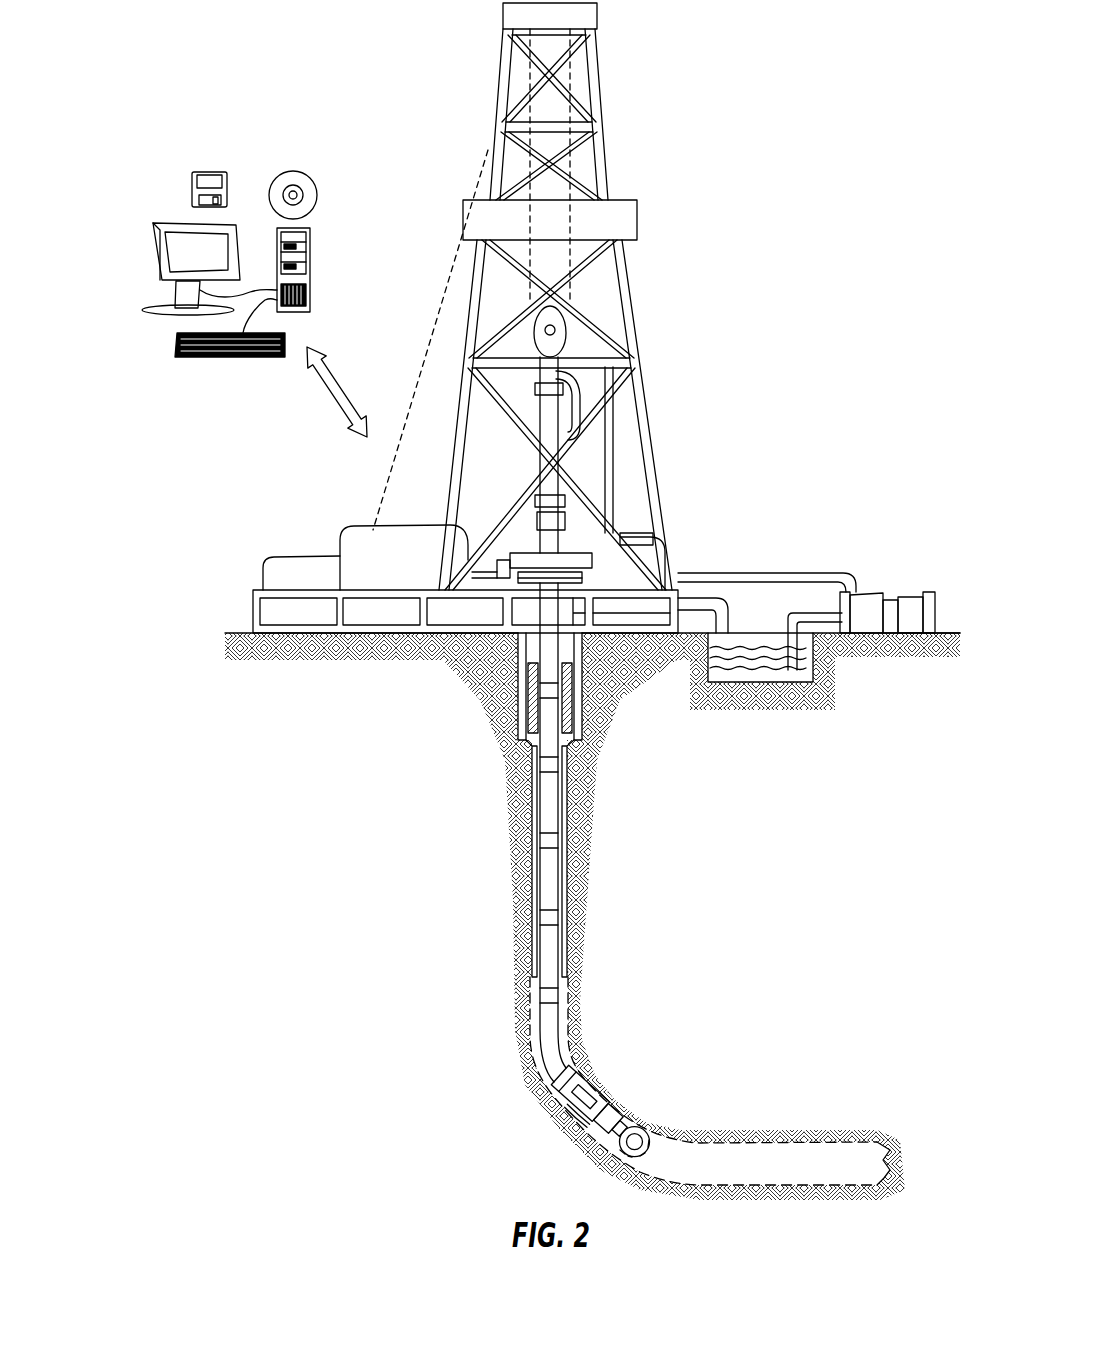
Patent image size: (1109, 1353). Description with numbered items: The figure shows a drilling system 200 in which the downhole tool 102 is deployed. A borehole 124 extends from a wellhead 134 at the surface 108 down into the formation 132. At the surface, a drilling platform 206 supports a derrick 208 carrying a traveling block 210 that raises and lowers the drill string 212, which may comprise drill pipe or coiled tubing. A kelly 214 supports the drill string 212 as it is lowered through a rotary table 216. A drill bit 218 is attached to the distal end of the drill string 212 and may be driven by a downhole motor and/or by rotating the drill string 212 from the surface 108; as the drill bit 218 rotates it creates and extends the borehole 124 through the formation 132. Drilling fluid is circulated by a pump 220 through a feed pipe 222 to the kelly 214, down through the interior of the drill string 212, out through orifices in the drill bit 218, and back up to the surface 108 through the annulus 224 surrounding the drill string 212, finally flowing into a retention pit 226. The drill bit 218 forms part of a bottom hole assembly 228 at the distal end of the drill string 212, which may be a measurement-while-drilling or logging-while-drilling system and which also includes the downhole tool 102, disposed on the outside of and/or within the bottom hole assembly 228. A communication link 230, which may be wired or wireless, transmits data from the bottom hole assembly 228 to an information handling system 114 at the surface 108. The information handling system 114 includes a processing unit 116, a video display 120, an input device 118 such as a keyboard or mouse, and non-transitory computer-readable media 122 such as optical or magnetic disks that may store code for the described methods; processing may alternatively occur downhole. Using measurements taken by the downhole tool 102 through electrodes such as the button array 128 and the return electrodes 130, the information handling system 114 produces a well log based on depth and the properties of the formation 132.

The drilling system 200 is at (871, 90).
The information handling system 114 is at (153, 153).
The non-transitory computer-readable media 122 is at (292, 170).
The video display 120 is at (157, 258).
The processing unit 116 is at (311, 240).
The input device 118 is at (185, 358).
The communication link 230 is at (325, 393).
The derrick 208 is at (612, 144).
The traveling block 210 is at (572, 331).
The kelly 214 is at (550, 417).
The rotary table 216 is at (588, 553).
The wellhead 134 is at (602, 578).
The drilling platform 206 is at (253, 612).
The feed pipe 222 is at (786, 573).
The pump 220 is at (862, 592).
The surface 108 is at (945, 633).
The retention pit 226 is at (757, 668).
The drill string 212 is at (560, 822).
The annulus 224 is at (530, 838).
The borehole 124 is at (565, 838).
The formation 132 is at (799, 926).
The button array 128 is at (589, 1082).
The downhole tool 102 is at (607, 1102).
The drill bit 218 is at (648, 1130).
The bottom hole assembly 228 is at (556, 1100).
The return electrodes 130 is at (586, 1113).